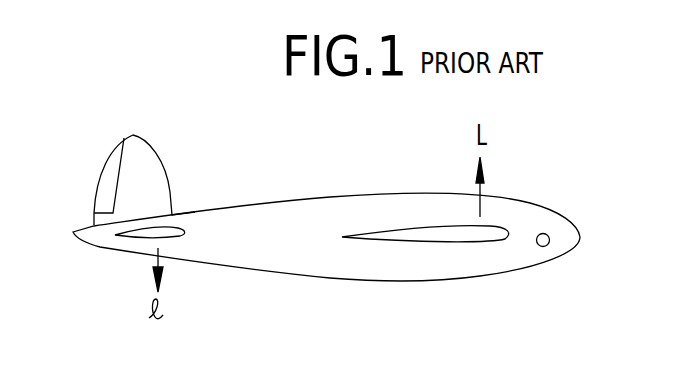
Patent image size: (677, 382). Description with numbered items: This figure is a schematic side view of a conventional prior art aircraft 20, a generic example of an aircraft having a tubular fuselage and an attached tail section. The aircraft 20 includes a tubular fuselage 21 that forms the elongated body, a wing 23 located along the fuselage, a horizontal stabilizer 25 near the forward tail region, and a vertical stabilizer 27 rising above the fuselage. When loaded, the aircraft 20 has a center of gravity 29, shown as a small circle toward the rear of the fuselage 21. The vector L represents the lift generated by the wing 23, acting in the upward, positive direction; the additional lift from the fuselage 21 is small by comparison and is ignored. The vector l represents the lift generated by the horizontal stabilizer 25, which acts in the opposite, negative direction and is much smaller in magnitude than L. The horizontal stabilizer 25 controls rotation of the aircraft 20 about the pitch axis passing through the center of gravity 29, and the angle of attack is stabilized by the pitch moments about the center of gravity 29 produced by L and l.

The aircraft 20 is at (360, 228).
The tubular fuselage 21 is at (270, 253).
The wing 23 is at (422, 241).
The horizontal stabilizer 25 is at (187, 232).
The vertical stabilizer 27 is at (150, 165).
The center of gravity 29 is at (542, 247).